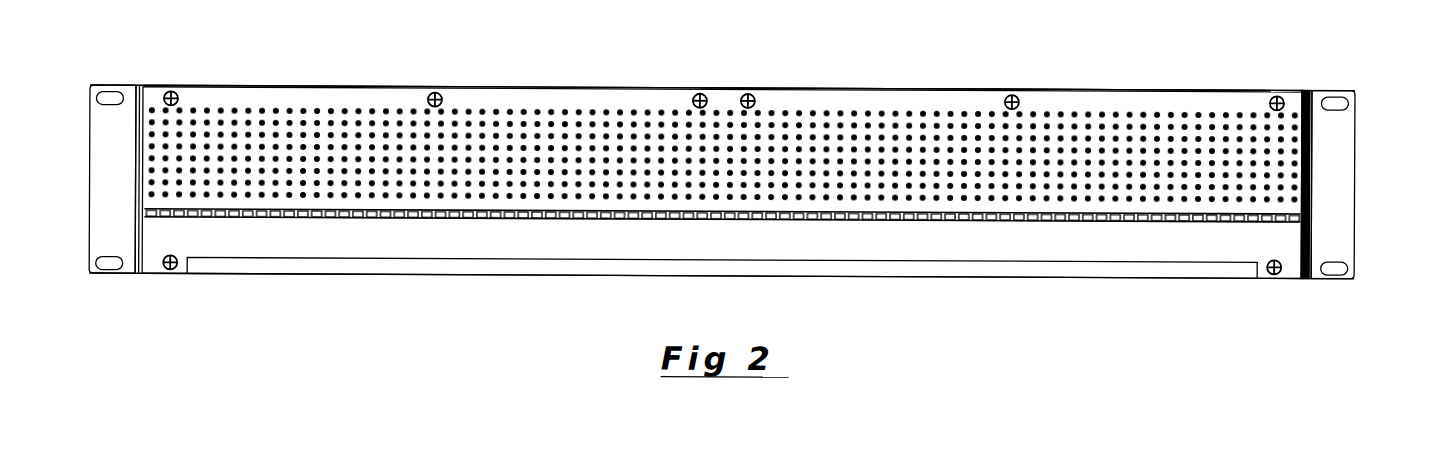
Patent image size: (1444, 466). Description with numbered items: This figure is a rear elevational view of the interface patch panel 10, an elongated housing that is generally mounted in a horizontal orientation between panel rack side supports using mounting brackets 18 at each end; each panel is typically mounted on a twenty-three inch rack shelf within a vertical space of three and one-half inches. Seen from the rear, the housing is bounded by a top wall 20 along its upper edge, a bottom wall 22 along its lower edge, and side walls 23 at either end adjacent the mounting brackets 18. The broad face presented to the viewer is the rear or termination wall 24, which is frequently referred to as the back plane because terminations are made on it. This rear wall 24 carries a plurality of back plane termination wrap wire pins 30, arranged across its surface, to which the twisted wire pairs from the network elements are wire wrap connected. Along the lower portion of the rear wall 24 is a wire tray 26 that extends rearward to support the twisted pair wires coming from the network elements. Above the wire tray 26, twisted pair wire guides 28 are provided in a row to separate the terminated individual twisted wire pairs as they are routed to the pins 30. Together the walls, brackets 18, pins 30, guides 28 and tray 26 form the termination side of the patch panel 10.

The patch panel 10 is at (918, 62).
The mounting brackets 18 is at (128, 168).
The top wall 20 is at (542, 87).
The bottom wall 22 is at (180, 273).
The side walls 23 is at (133, 212).
The rear or termination wall 24 is at (1137, 90).
The wire tray 26 is at (910, 266).
The twisted pair wire guides 28 is at (525, 212).
The back plane termination wrap wire pins 30 is at (787, 109).